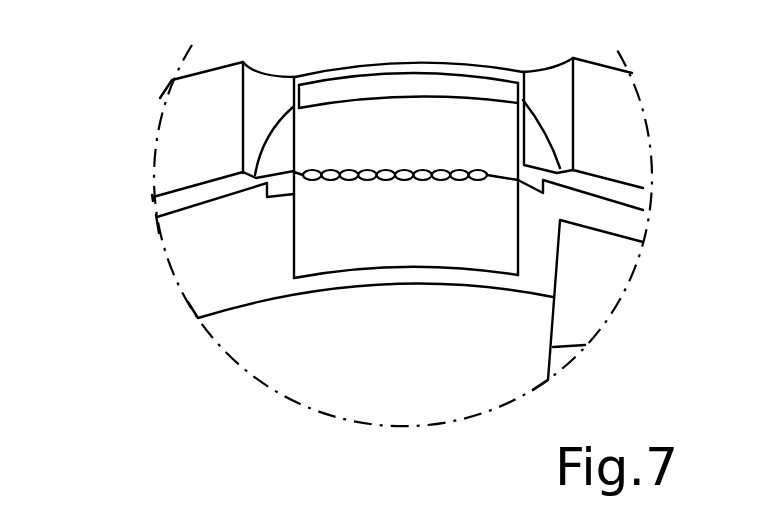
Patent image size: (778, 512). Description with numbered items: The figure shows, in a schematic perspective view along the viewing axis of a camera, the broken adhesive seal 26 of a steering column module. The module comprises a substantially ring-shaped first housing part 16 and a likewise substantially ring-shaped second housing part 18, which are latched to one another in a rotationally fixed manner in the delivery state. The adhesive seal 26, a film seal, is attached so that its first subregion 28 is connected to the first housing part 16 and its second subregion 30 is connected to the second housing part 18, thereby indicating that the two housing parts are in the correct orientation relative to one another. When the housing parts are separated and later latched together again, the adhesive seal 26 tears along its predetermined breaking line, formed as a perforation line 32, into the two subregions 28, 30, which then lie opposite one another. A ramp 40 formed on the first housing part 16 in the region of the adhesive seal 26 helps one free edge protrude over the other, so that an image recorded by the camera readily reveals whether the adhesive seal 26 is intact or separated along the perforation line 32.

The first housing part 16 is at (192, 140).
The second housing part 18 is at (207, 263).
The adhesive seal 26 is at (395, 125).
The first subregion 28 is at (432, 115).
The second subregion 30 is at (357, 247).
The perforation line 32 is at (485, 173).
The ramp 40 is at (528, 130).